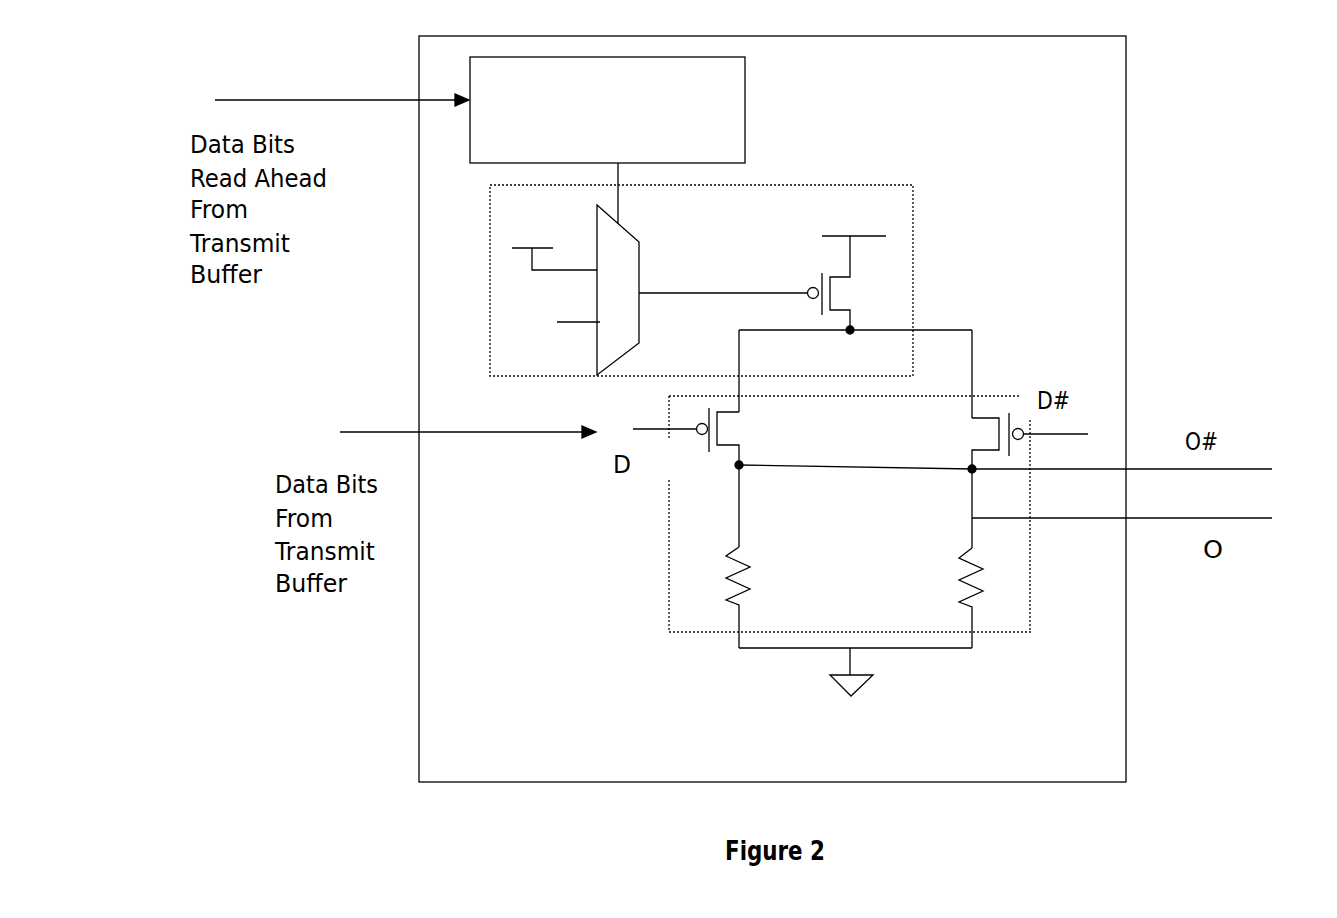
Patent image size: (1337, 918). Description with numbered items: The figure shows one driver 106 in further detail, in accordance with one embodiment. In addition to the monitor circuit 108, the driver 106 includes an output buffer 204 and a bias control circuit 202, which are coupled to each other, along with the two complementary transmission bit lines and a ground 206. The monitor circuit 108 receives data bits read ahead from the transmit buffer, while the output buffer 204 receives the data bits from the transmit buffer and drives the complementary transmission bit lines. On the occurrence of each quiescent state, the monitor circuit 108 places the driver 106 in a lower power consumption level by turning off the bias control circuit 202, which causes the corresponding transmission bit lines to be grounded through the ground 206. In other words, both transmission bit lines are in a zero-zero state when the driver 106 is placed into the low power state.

The driver 106 is at (1108, 107).
The monitor circuit 108 is at (627, 131).
The bias control circuit 202 is at (787, 185).
The output buffer 204 is at (680, 567).
The ground 206 is at (832, 675).